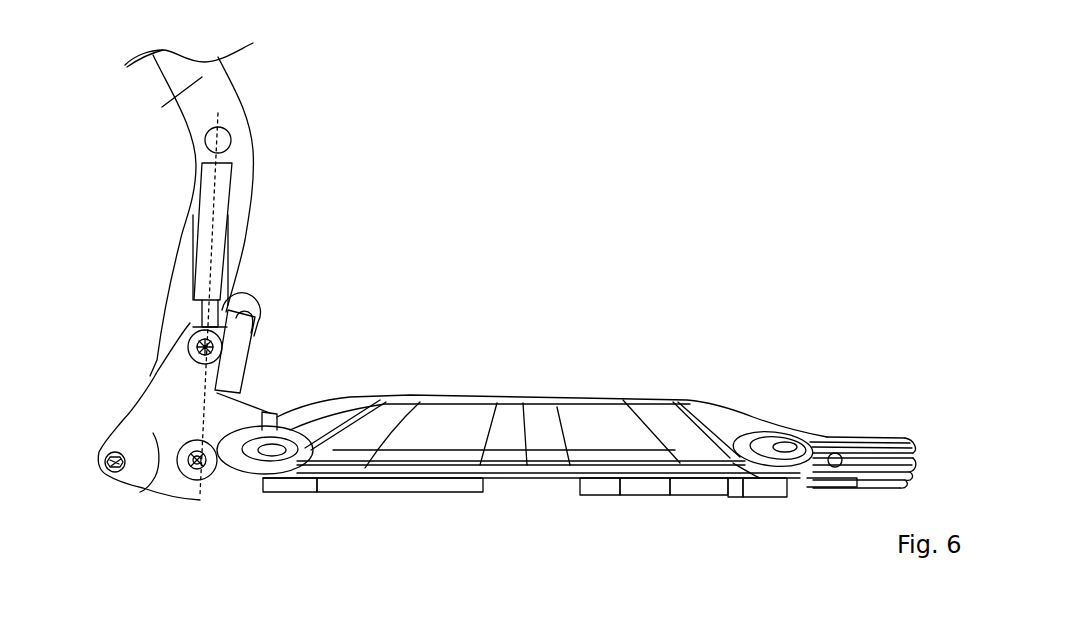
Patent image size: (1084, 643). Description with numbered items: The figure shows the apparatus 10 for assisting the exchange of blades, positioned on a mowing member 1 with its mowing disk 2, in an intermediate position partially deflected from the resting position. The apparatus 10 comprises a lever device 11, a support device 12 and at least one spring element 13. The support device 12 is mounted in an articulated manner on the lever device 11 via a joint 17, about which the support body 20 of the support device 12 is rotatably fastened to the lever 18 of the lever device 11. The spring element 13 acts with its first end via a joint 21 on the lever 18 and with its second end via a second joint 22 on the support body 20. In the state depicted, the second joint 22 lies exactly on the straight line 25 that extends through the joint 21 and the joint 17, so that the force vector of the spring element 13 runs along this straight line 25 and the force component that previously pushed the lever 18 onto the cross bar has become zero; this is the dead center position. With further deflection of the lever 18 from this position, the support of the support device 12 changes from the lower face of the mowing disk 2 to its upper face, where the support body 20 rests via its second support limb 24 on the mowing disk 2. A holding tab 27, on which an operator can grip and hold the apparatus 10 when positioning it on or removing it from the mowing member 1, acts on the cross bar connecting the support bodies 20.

The mowing member 1 is at (603, 377).
The mowing disk 2 is at (478, 398).
The apparatus 10 is at (277, 103).
The lever device 11 is at (263, 180).
The support device 12 is at (120, 407).
The spring element 13 is at (223, 235).
The joint 17 is at (200, 488).
The lever 18 is at (139, 108).
The support body 20 is at (160, 440).
The joint 21 is at (234, 141).
The second joint 22 is at (185, 340).
The second support limb 24 is at (262, 412).
The straight line 25 is at (214, 257).
The holding tab 27 is at (258, 353).